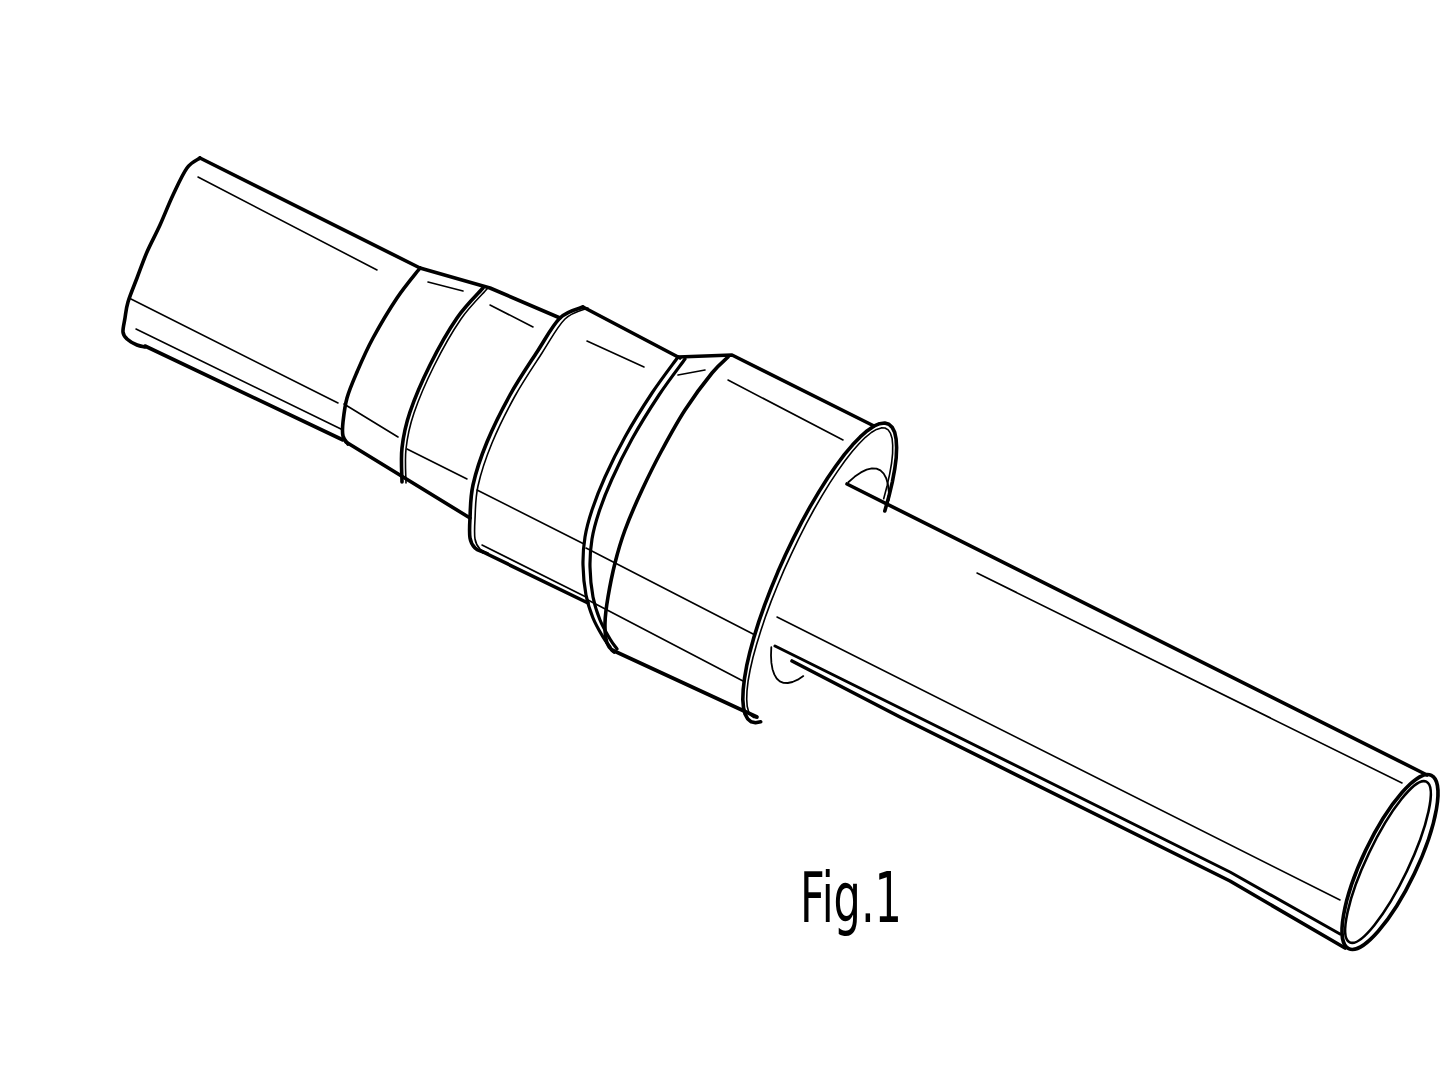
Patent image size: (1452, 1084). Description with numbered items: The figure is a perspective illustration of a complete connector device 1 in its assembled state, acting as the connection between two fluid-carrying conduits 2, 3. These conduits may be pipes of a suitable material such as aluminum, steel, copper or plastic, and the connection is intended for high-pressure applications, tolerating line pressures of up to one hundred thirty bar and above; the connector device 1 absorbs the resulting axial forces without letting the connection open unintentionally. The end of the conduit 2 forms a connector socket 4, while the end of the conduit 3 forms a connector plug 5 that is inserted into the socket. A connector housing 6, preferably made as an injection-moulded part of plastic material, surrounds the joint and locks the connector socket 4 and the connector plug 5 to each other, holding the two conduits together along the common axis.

The connector device 1 is at (1015, 255).
The fluid carrying conduit 2 is at (232, 183).
The fluid carrying conduit 3 is at (1264, 740).
The connector socket 4 is at (533, 285).
The connector plug 5 is at (928, 497).
The connector housing 6 is at (818, 357).